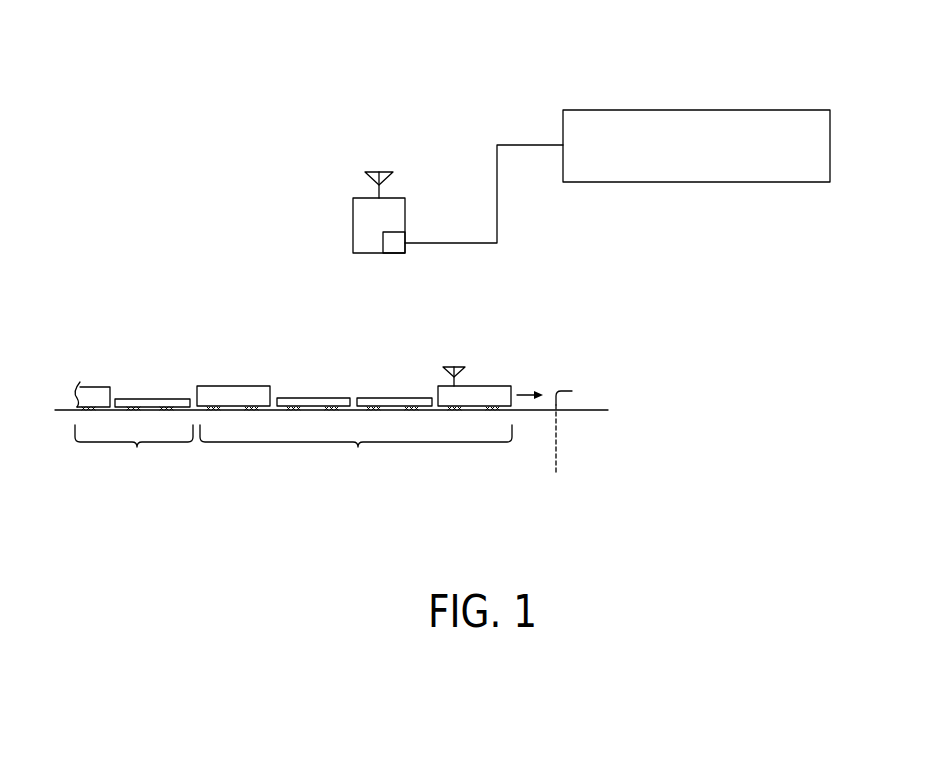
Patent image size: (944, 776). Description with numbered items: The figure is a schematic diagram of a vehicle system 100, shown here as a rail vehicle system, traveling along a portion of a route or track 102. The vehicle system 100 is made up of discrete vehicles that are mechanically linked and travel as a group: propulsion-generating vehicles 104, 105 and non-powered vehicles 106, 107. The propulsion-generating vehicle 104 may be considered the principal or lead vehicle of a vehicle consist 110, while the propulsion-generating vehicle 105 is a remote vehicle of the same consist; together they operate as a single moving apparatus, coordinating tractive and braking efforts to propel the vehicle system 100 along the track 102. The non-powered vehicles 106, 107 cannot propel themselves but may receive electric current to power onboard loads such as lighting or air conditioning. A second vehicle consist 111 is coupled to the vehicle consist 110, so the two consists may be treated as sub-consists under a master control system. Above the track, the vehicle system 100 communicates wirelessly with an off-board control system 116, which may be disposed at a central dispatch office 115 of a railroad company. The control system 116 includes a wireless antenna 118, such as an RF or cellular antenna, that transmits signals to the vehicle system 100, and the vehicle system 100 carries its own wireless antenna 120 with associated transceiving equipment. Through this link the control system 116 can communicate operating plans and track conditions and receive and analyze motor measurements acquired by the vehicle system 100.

The vehicle system 100 is at (311, 68).
The route or track 102 is at (538, 415).
The propulsion-generating vehicle 104 is at (499, 379).
The propulsion-generating vehicle 105 is at (226, 374).
The non-powered vehicle 106 is at (386, 387).
The non-powered vehicle 107 is at (306, 387).
The vehicle consist 110 is at (358, 447).
The second vehicle consist 111 is at (137, 447).
The central dispatch office 115 is at (321, 182).
The control system 116 is at (708, 110).
The wireless antenna 118 is at (396, 158).
The wireless antenna 120 is at (463, 359).